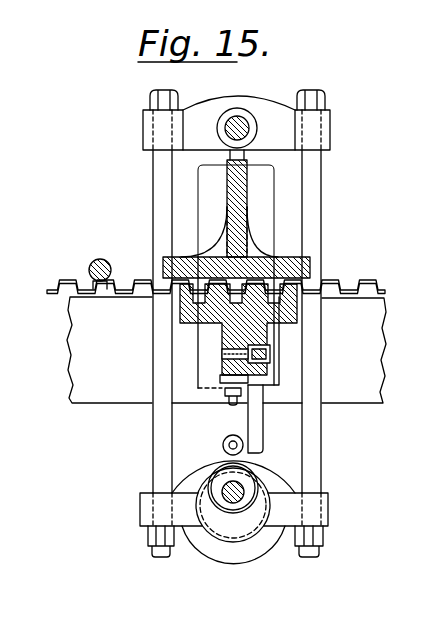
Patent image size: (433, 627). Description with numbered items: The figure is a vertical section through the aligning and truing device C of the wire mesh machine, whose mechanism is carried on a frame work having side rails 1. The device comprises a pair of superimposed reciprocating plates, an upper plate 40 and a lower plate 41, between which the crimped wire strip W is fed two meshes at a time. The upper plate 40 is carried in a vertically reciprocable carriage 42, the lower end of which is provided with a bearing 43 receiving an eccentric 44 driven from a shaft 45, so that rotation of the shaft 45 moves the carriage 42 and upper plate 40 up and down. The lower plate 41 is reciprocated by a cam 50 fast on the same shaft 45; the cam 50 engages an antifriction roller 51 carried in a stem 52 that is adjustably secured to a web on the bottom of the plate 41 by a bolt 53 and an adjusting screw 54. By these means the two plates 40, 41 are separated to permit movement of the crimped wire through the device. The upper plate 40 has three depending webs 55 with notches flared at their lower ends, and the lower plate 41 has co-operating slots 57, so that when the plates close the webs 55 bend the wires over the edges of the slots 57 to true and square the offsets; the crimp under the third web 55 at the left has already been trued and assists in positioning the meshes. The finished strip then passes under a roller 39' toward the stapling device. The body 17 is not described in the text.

The side rails 1 is at (101, 393).
The arm or body of the device 17 is at (256, 238).
The roller 39' is at (86, 257).
The upper plate 40 is at (163, 263).
The lower plate 41 is at (183, 313).
The vertically reciprocable carriage 42 is at (232, 95).
The bearing 43 is at (224, 557).
The eccentric 44 is at (220, 528).
The shaft 45 is at (246, 486).
The cam 50 is at (222, 461).
The antifriction roller 51 is at (226, 437).
The stem 52 is at (264, 418).
The bolt 53 is at (276, 355).
The adjusting screw 54 is at (228, 400).
The depending webs 55 is at (272, 282).
The slots 57 is at (274, 303).
The aligning and truing device C is at (126, 123).
The work piece W is at (381, 285).